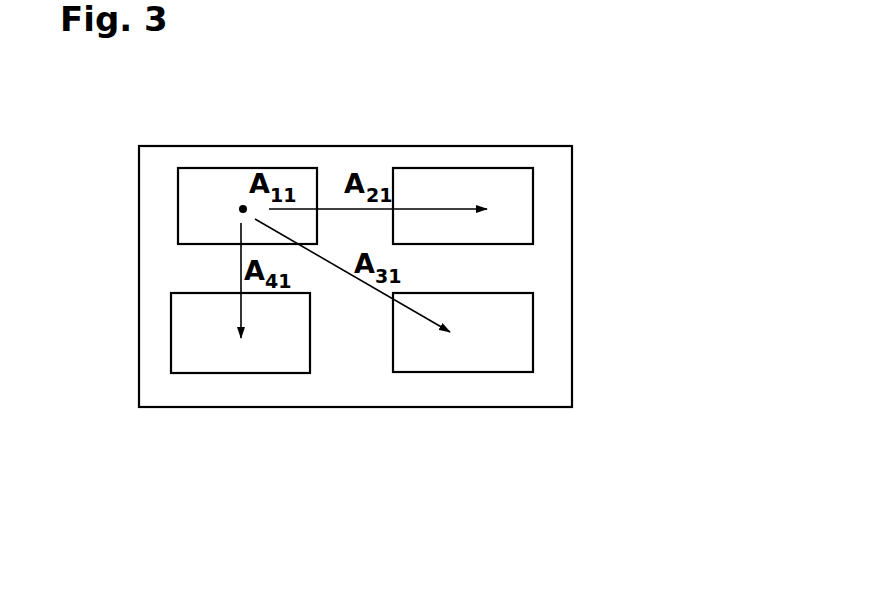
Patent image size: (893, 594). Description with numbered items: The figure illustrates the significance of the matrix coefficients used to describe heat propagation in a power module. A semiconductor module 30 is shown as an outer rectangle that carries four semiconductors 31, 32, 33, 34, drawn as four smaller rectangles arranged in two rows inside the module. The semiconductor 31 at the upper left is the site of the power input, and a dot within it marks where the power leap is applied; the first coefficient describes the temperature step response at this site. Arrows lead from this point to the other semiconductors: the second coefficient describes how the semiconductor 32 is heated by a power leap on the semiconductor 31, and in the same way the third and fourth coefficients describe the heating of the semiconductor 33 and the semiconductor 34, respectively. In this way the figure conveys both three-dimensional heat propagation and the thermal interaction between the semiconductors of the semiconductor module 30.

The semiconductor module 30 is at (619, 278).
The semiconductor 31 is at (178, 211).
The semiconductor 32 is at (533, 209).
The semiconductor 33 is at (533, 336).
The semiconductor 34 is at (171, 336).